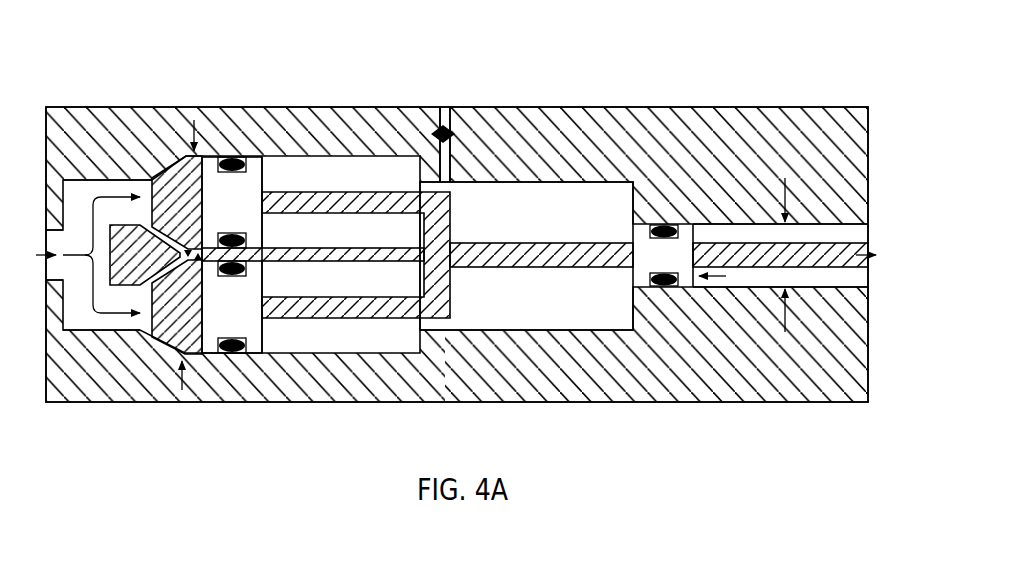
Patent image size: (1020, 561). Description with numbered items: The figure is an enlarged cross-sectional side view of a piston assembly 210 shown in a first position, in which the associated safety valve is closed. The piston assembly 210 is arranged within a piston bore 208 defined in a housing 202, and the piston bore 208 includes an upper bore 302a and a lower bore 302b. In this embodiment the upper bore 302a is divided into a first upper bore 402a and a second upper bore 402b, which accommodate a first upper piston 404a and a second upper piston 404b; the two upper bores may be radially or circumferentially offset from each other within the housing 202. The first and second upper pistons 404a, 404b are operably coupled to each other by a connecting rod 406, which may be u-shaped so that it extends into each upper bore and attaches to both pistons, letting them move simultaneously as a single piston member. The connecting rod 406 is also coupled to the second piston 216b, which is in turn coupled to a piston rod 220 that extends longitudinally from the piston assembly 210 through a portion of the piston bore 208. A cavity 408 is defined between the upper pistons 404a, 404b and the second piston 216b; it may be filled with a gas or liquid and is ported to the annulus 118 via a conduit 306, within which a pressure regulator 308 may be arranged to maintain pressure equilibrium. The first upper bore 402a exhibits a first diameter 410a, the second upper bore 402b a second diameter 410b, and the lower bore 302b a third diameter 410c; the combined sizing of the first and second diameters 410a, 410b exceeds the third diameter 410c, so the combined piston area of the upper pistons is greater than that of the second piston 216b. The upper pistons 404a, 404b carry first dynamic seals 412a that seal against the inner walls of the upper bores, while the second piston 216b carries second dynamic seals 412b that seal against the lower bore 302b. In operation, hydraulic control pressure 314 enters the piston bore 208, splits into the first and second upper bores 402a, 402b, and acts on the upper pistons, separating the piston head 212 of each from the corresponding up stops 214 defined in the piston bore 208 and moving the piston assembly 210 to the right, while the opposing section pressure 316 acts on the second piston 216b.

The annulus 118 is at (534, 97).
The housing 202 is at (593, 130).
The piston bore 208 is at (108, 184).
The piston assembly 210 is at (332, 74).
The piston head 212 is at (152, 213).
The up stops 214 is at (150, 177).
The second piston 216b is at (642, 231).
The piston rod 220 is at (847, 253).
The upper bore 302a is at (323, 152).
The lower bore 302b is at (722, 226).
The conduit 306 is at (441, 112).
The pressure regulator 308 is at (448, 130).
The hydraulic control pressure 314 is at (97, 294).
The opposing section pressure 316 is at (720, 288).
The first upper bore 402a is at (372, 168).
The second upper bore 402b is at (366, 352).
The first upper piston 404a is at (255, 178).
The second upper piston 404b is at (255, 333).
The connecting rod 406 is at (390, 197).
The cavity 408 is at (506, 219).
The first diameter 410a is at (189, 154).
The second diameter 410b is at (185, 357).
The third diameter 410c is at (779, 222).
The first dynamic seals 412a is at (233, 157).
The second dynamic seals 412b is at (664, 290).